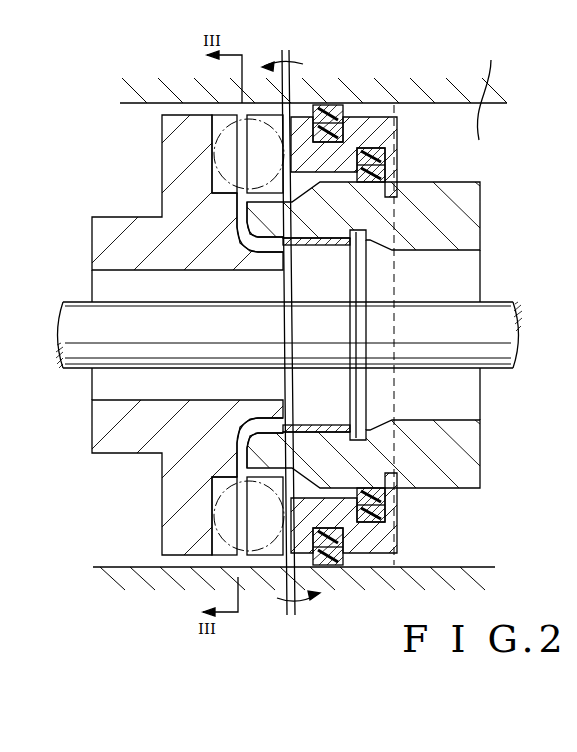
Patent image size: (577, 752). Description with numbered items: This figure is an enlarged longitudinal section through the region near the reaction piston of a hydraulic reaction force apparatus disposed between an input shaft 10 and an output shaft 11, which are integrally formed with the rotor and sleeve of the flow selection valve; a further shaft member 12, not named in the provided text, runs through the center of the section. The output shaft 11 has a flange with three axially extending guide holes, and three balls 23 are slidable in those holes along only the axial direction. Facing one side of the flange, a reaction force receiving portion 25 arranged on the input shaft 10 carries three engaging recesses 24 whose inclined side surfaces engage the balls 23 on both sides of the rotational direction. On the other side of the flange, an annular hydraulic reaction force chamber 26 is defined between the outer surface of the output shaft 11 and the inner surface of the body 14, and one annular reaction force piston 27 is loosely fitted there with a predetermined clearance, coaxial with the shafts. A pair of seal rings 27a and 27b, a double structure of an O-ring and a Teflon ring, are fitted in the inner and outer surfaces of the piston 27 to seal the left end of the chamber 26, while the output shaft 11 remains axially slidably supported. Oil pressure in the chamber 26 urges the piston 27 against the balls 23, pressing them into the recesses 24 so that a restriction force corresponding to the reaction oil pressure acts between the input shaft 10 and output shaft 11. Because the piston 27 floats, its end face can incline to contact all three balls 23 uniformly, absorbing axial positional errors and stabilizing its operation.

The input shaft 10 is at (107, 237).
The output shaft 11 is at (470, 202).
The shaft 12 is at (490, 318).
The body 14 is at (435, 88).
The balls 23 is at (243, 120).
The engaging recesses 24 is at (227, 130).
The reaction force receiving portion 25 is at (183, 143).
The hydraulic reaction force chamber 26 is at (487, 89).
The reaction force piston 27 is at (382, 122).
The seal ring 27a is at (385, 177).
The seal ring 27b is at (330, 103).